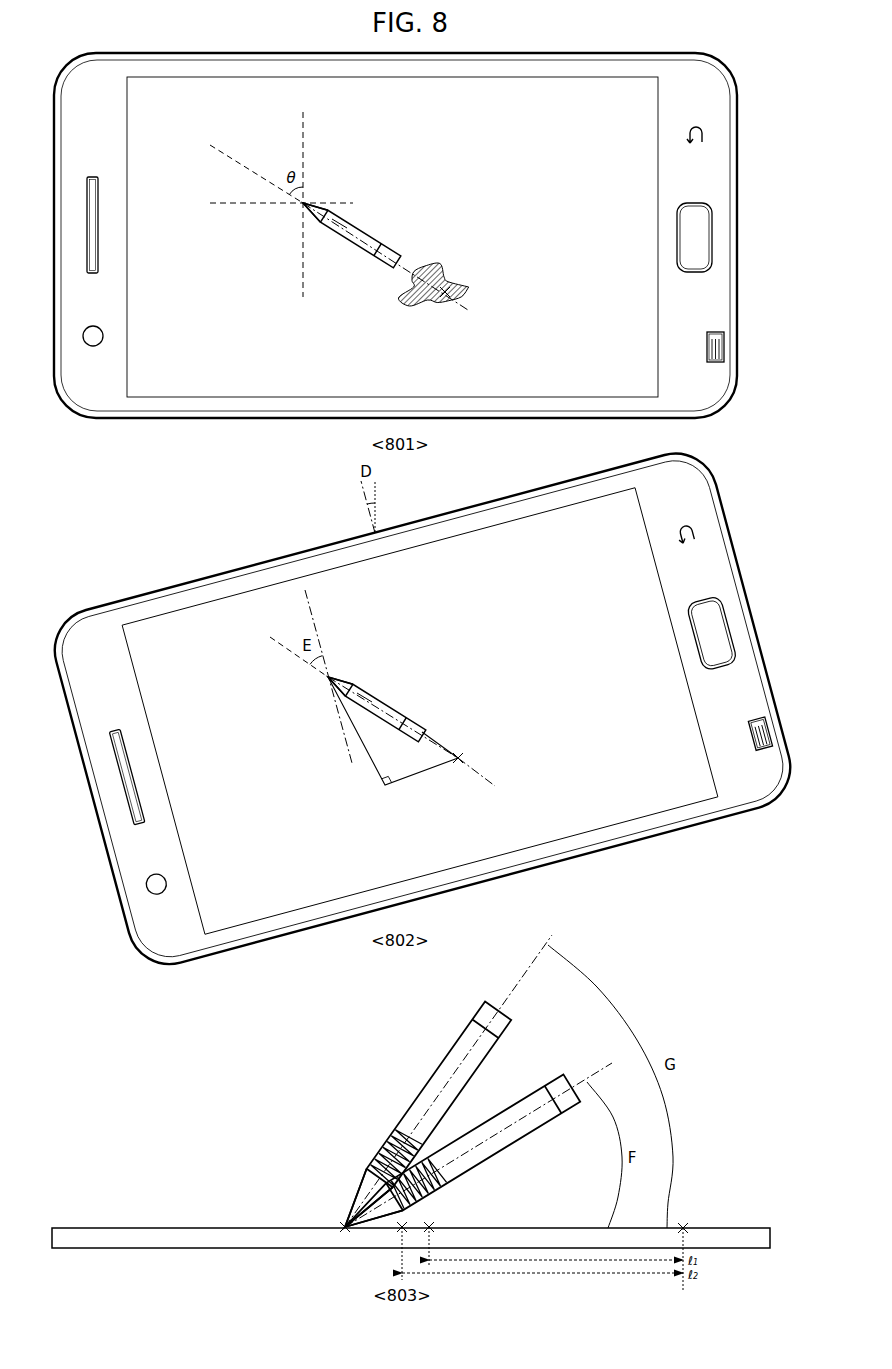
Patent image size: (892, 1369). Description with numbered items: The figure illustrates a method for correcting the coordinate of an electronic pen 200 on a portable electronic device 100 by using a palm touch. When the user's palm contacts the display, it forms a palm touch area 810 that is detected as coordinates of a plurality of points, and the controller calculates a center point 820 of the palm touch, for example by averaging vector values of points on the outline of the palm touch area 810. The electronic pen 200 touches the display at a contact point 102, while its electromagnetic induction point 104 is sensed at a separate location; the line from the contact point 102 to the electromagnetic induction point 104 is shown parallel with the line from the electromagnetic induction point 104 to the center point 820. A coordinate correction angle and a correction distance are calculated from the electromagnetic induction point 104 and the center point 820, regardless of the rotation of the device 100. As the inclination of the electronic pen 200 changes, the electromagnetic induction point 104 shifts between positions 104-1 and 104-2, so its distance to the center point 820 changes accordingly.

The portable electronic device 100 is at (739, 149).
The contact point 102 is at (343, 170).
The electromagnetic induction point 104 is at (349, 220).
The electromagnetic induction point position 104-1 is at (433, 1224).
The electromagnetic induction point position 104-2 is at (408, 1222).
The electronic pen 200 is at (463, 1128).
The palm touch area 810 is at (430, 258).
The center point of the palm touch 820 is at (446, 297).